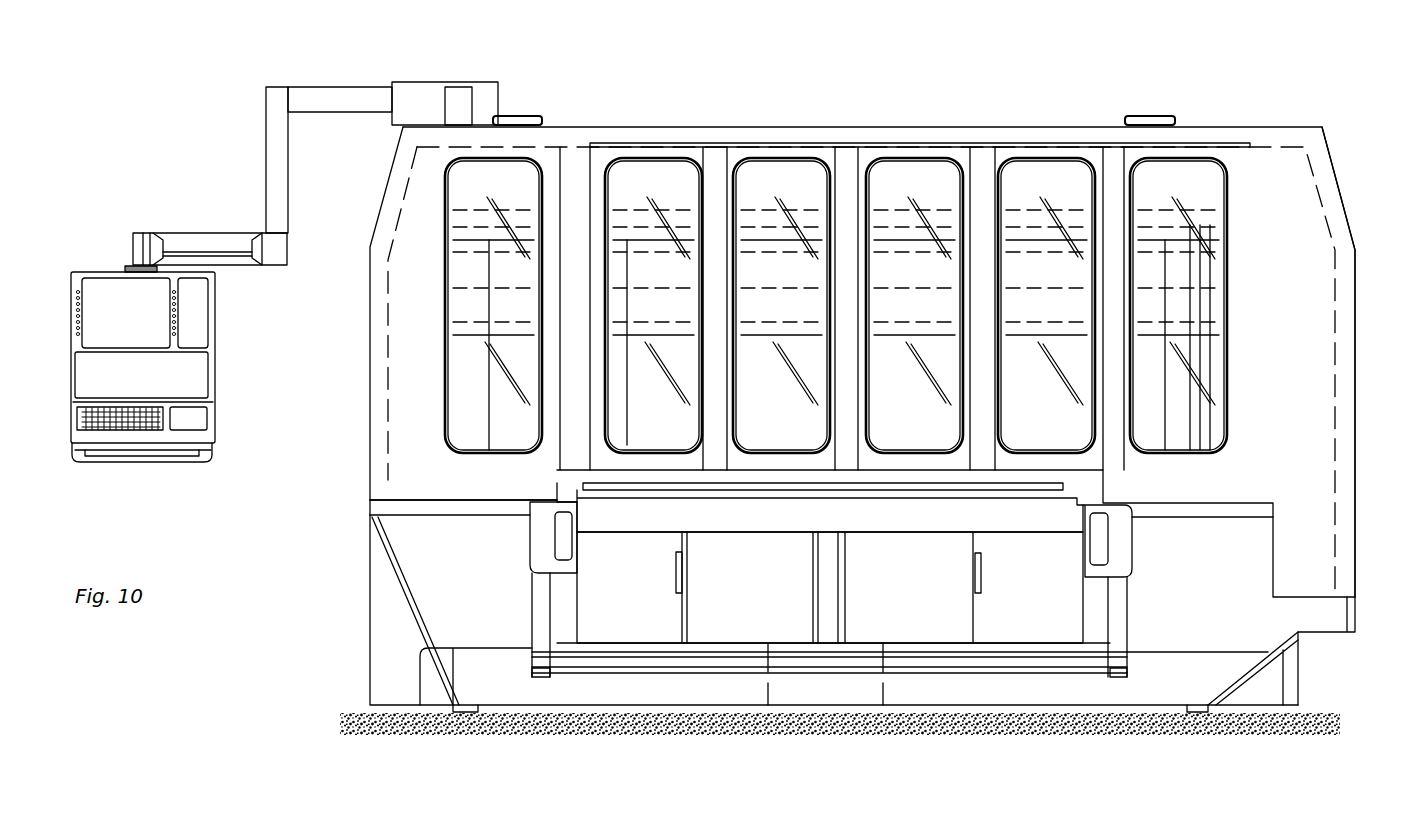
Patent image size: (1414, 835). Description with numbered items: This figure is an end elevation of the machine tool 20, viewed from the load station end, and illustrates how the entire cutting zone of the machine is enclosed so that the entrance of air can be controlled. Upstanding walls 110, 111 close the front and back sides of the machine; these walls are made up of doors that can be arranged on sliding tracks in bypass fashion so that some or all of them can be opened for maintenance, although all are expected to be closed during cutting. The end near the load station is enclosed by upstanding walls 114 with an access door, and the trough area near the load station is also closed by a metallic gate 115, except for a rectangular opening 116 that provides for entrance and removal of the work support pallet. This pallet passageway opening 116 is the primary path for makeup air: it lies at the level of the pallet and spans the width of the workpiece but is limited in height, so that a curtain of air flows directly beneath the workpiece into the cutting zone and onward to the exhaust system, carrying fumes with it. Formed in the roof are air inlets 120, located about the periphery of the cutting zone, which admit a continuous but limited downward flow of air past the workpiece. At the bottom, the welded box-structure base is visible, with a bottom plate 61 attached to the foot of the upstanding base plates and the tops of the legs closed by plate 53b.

The machine tool 20 is at (850, 118).
The upstanding wall 110 is at (375, 392).
The upstanding wall 111 is at (1350, 340).
The upstanding walls 114 is at (670, 147).
The metallic gate 115 is at (748, 607).
The rectangular opening 116 is at (793, 473).
The air inlets 120 is at (532, 117).
The plate 53b is at (432, 500).
The bottom plate 61 is at (397, 708).